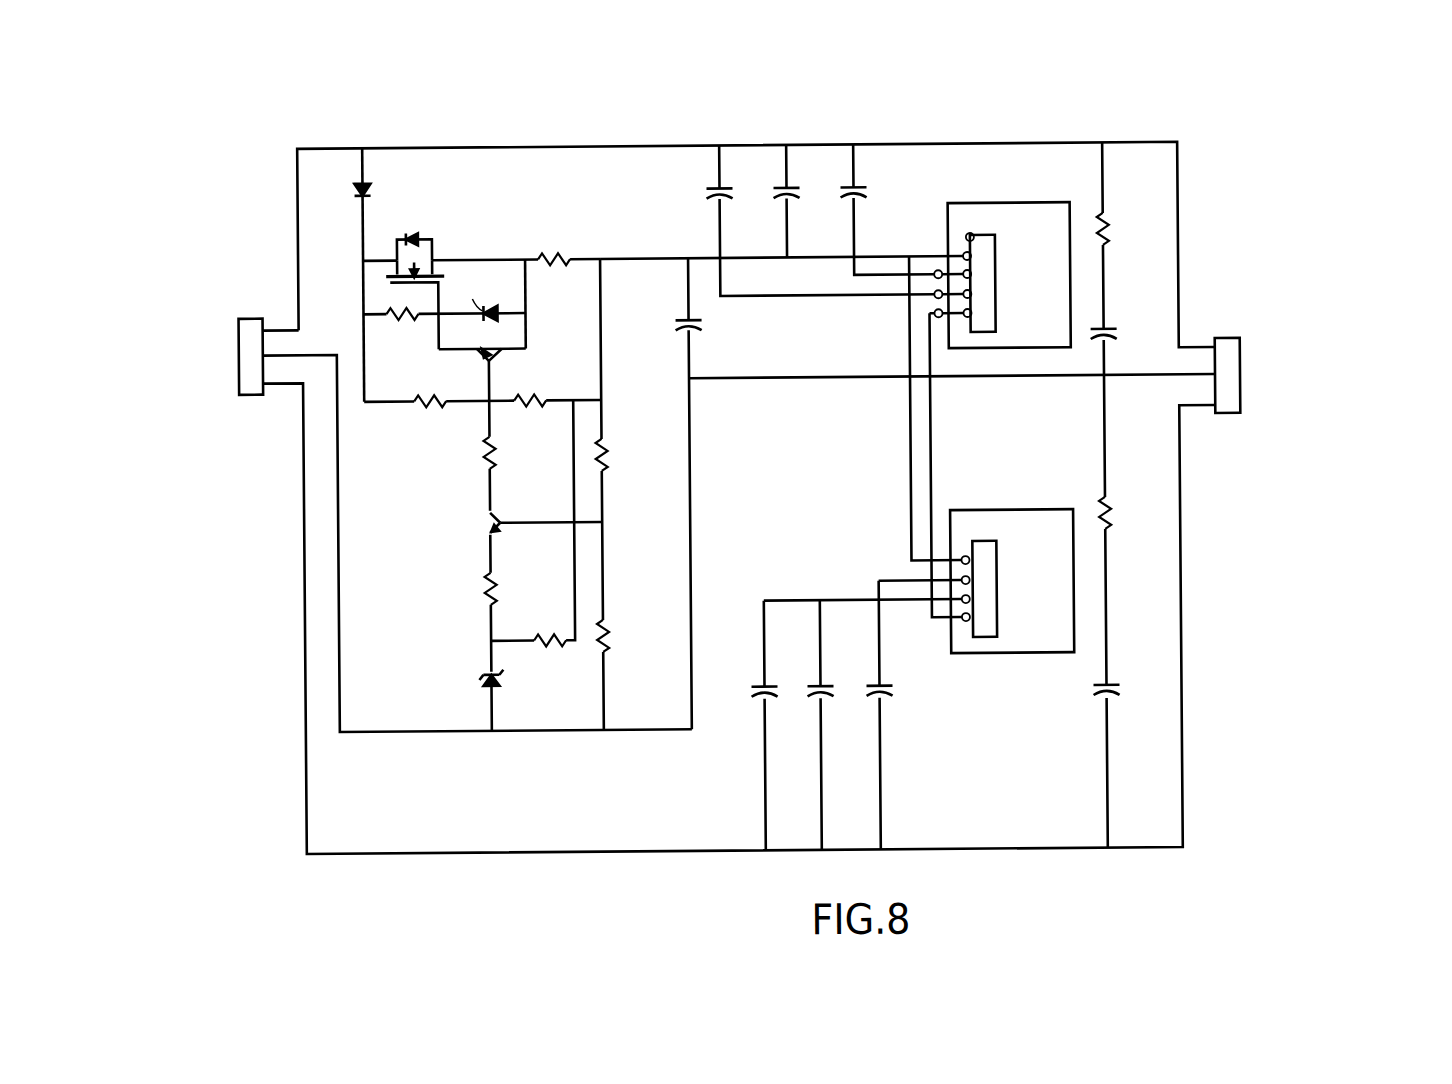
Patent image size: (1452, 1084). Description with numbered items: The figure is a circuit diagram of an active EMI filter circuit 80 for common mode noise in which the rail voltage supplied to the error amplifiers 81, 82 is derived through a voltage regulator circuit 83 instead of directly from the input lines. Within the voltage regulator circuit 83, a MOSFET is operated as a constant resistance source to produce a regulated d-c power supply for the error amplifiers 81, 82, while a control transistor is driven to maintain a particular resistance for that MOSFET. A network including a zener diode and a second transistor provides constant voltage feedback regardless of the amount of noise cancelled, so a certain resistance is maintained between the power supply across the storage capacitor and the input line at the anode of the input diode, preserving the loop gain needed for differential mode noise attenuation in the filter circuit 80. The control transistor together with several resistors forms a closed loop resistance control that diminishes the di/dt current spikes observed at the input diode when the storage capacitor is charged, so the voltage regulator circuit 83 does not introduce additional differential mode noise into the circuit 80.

The voltage regulator circuit 80 is at (751, 110).
The error amplifier 81 is at (996, 206).
The error amplifier 82 is at (998, 512).
The voltage regulator circuit 83 is at (753, 453).